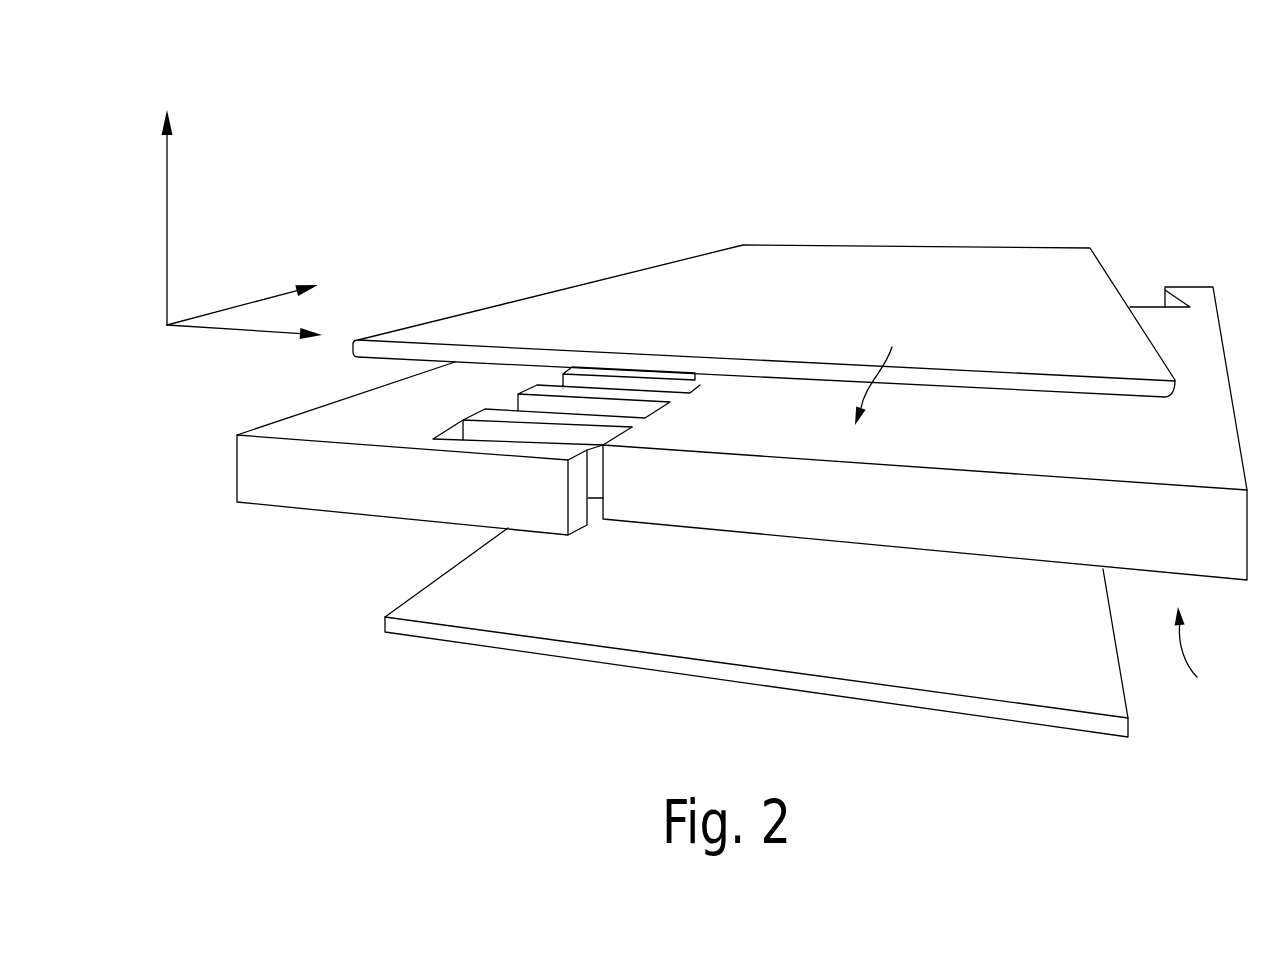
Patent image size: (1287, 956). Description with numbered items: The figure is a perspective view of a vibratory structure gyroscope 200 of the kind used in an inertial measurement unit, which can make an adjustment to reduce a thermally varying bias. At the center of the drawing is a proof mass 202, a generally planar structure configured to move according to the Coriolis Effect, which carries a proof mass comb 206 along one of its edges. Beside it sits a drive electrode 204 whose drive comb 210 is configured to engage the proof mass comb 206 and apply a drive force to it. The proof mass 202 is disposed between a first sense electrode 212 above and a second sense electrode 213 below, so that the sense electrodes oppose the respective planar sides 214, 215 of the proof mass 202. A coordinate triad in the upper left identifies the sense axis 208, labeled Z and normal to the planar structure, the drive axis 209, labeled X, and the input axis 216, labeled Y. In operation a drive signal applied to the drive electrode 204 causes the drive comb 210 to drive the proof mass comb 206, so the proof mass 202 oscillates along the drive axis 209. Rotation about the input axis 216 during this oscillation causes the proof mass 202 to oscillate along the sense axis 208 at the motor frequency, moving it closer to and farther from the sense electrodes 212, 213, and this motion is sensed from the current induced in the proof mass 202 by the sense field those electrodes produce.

The vibratory structure gyroscope 200 is at (1181, 120).
The proof mass 202 is at (998, 425).
The drive electrode 204 is at (248, 473).
The proof mass comb 206 is at (577, 403).
The sense axis (Z) 208 is at (165, 205).
The drive axis (X) 209 is at (222, 329).
The drive comb 210 is at (537, 512).
The first sense electrode 212 is at (898, 283).
The second sense electrode 213 is at (892, 585).
The planar side 214 is at (885, 371).
The planar side 215 is at (1205, 656).
The input axis (Y) 216 is at (226, 309).